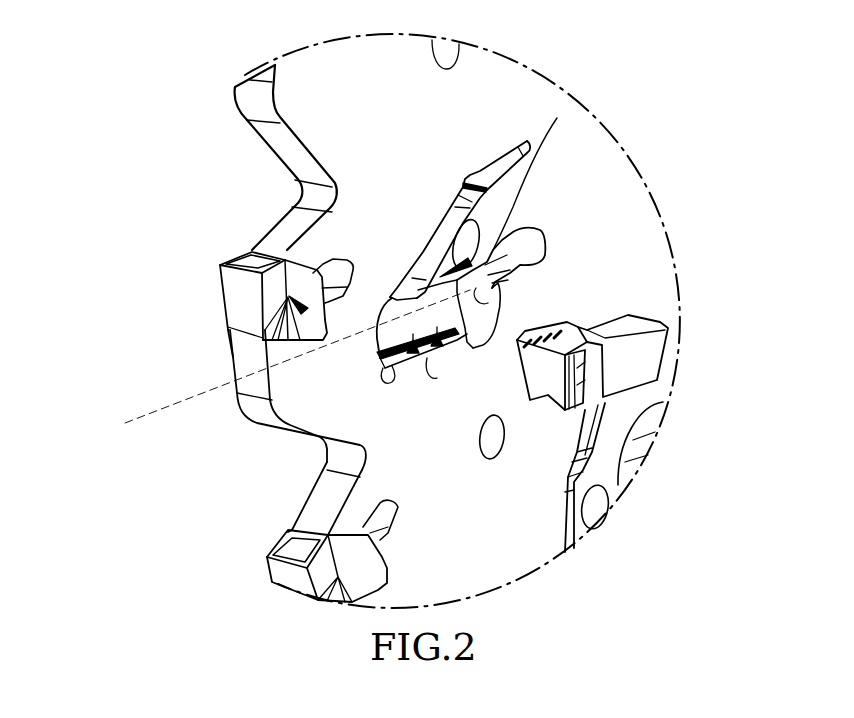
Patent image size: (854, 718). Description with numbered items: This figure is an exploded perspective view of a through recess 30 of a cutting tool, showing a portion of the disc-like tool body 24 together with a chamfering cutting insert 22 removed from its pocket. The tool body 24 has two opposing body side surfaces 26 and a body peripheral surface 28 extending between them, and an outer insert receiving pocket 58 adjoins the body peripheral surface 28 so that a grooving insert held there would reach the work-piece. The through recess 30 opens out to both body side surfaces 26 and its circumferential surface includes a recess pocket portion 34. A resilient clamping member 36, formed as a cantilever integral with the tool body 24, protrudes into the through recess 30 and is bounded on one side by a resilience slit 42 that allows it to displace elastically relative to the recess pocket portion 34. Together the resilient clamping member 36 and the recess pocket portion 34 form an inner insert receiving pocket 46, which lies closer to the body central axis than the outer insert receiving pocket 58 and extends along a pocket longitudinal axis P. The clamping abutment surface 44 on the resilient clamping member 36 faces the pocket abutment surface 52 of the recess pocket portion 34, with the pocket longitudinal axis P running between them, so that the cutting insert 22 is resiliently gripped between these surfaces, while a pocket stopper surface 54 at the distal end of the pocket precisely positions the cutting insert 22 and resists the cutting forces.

The cutting insert 22 is at (654, 296).
The tool body 24 is at (594, 172).
The body side surfaces 26 is at (226, 110).
The body peripheral surface 28 is at (247, 360).
The through recess 30 is at (409, 362).
The recess pocket portion 34 is at (473, 330).
The resilient clamping member 36 is at (557, 118).
The resilience slit 42 is at (440, 233).
The clamping abutment surface 44 is at (372, 349).
The inner insert receiving pocket 46 is at (437, 358).
The pocket abutment surface 52 is at (375, 372).
The pocket stopper surface 54 is at (495, 300).
The outer insert receiving pocket 58 is at (263, 293).
The pocket longitudinal axis P is at (133, 424).